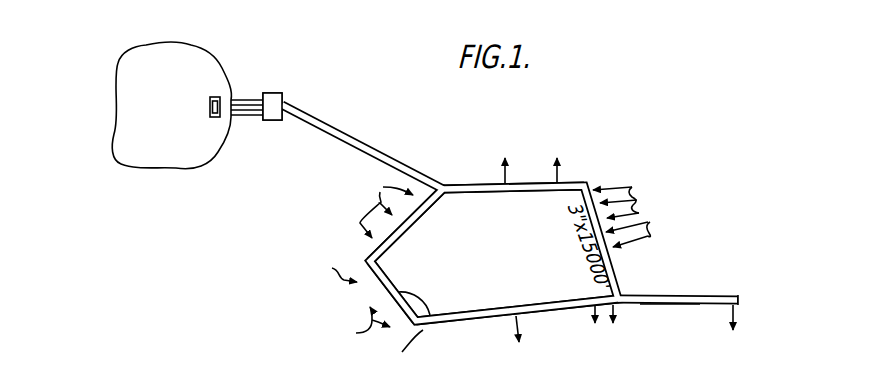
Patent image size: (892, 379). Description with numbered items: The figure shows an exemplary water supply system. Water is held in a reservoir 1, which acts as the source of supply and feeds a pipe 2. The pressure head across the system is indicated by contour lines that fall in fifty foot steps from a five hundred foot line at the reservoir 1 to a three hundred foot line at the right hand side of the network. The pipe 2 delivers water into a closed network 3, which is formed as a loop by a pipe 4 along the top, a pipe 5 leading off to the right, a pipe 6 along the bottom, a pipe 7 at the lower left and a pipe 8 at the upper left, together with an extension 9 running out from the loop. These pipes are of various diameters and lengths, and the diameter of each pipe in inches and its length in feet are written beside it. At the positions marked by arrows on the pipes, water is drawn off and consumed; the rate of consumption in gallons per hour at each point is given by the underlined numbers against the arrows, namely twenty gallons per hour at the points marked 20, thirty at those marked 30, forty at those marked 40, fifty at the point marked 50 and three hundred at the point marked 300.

The reservoir 1 is at (175, 158).
The pipe 2 is at (403, 170).
The closed network 3 is at (500, 258).
The pipe 4 is at (527, 183).
The pipe 5 is at (620, 268).
The pipe 6 is at (552, 313).
The pipe 7 is at (385, 292).
The pipe 8 is at (362, 250).
The extension 9 is at (663, 305).
The consumption rate indication 20 is at (662, 194).
The consumption rate indication 30 is at (381, 195).
The consumption rate indication 40 is at (511, 158).
The consumption rate indication 50 is at (732, 362).
The consumption rate indication 300 is at (546, 373).